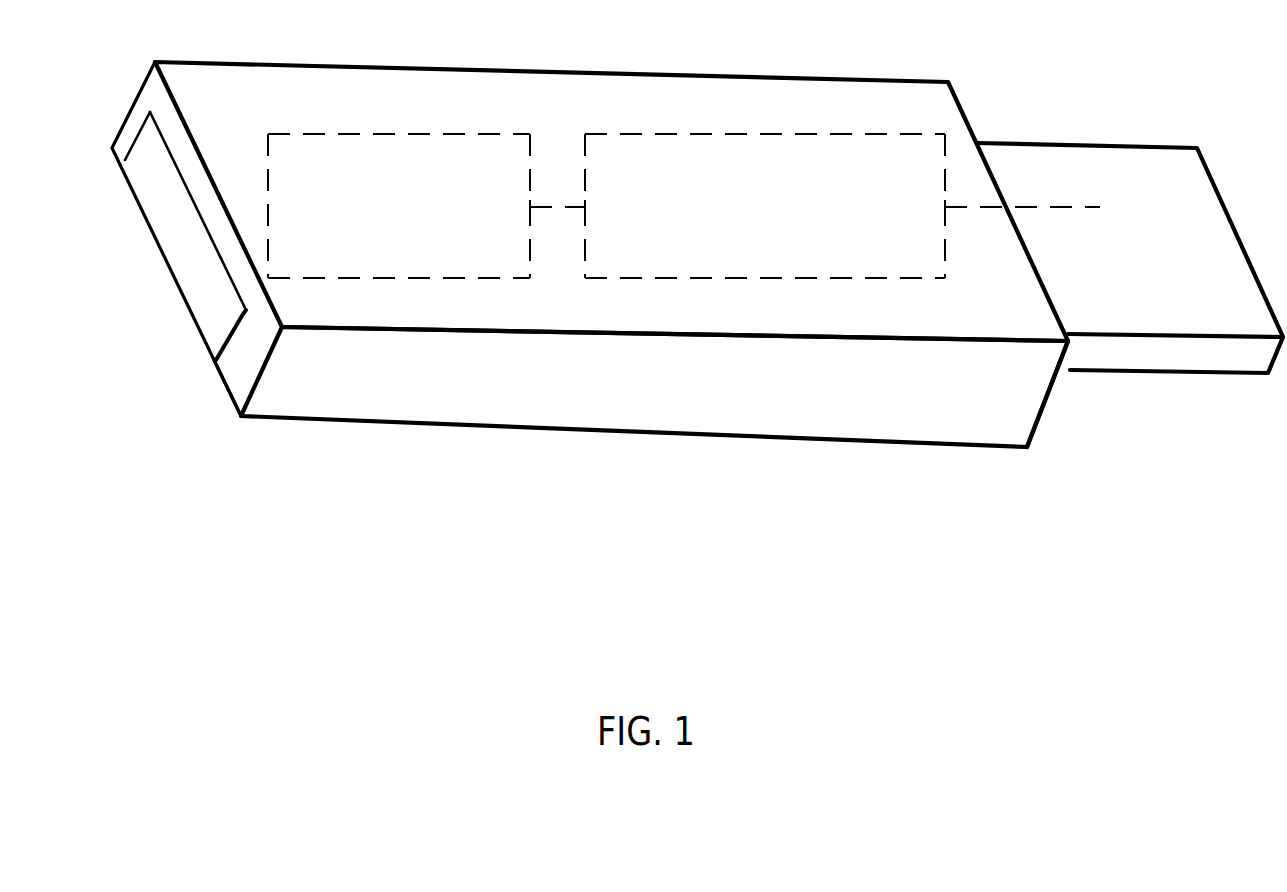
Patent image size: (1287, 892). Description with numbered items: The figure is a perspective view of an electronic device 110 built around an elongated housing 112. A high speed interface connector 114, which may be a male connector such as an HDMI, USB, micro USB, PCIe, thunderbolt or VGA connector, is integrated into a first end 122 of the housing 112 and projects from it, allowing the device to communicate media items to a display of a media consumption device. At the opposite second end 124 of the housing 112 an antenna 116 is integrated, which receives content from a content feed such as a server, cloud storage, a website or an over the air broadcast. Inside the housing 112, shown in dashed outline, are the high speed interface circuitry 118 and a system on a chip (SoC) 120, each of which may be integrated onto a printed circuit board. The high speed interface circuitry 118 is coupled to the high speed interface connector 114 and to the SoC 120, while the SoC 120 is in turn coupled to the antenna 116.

The electronic device 110 is at (571, 72).
The housing 112 is at (601, 132).
The high speed interface connector 114 is at (1164, 224).
The antenna 116 is at (268, 228).
The high speed interface circuitry 118 is at (788, 232).
The system on a chip (SoC) 120 is at (421, 233).
The first end 122 is at (1050, 374).
The second end 124 is at (234, 365).